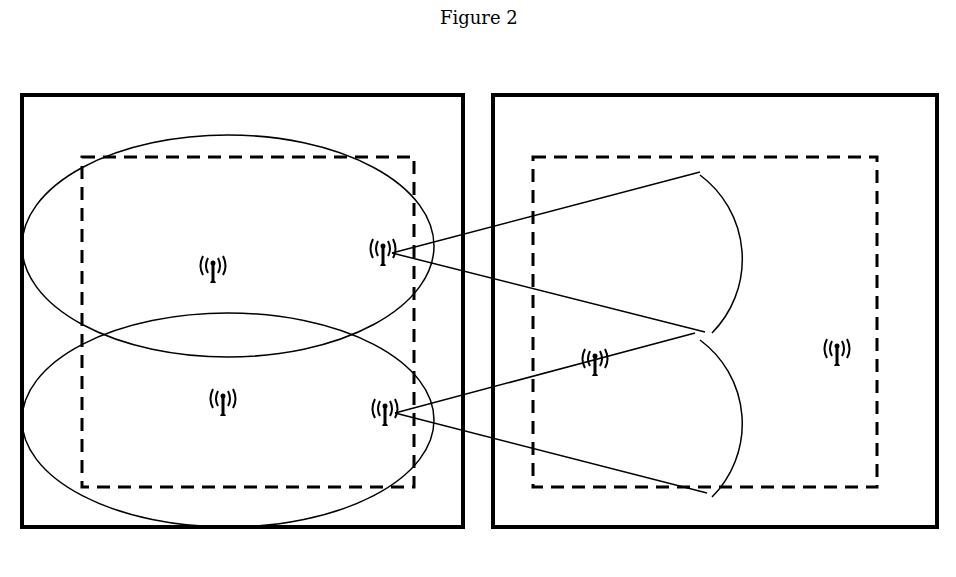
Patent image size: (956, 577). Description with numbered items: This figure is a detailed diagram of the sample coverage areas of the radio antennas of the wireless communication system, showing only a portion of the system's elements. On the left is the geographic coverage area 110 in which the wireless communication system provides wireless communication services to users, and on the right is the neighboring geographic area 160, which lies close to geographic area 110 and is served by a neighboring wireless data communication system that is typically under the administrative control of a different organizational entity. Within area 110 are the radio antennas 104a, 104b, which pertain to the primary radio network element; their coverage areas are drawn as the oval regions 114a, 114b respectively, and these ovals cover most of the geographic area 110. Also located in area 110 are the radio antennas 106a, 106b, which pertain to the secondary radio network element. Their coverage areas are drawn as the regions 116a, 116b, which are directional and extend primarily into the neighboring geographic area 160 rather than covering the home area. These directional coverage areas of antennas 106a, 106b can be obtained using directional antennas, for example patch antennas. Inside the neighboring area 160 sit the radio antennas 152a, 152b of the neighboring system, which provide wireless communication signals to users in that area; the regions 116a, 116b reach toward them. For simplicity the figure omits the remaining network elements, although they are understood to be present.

The geographic coverage area 110 is at (242, 311).
The geographic area 160 is at (715, 311).
The radio antenna 104a is at (227, 419).
The radio antenna 104b is at (217, 259).
The radio antenna 106a is at (388, 429).
The radio antenna 106b is at (389, 242).
The oval region 114a is at (228, 420).
The oval region 114b is at (228, 246).
The coverage region 116a is at (568, 415).
The coverage region 116b is at (567, 252).
The radio antenna 152a is at (598, 379).
The radio antenna 152b is at (841, 369).